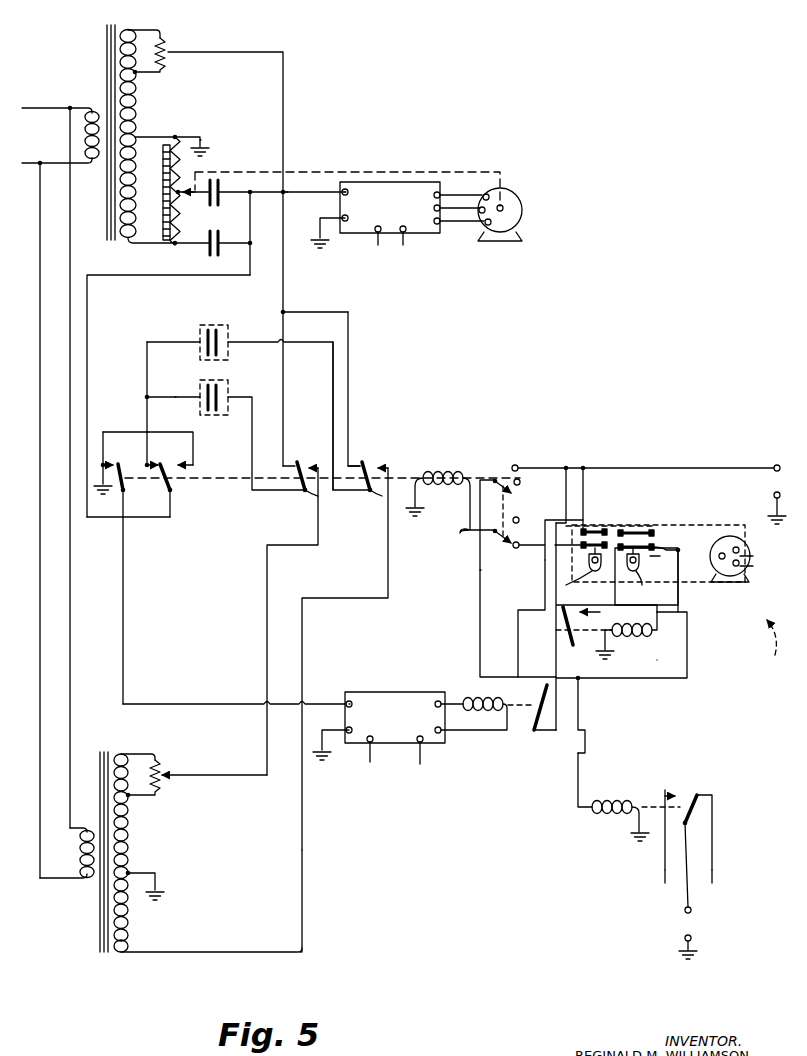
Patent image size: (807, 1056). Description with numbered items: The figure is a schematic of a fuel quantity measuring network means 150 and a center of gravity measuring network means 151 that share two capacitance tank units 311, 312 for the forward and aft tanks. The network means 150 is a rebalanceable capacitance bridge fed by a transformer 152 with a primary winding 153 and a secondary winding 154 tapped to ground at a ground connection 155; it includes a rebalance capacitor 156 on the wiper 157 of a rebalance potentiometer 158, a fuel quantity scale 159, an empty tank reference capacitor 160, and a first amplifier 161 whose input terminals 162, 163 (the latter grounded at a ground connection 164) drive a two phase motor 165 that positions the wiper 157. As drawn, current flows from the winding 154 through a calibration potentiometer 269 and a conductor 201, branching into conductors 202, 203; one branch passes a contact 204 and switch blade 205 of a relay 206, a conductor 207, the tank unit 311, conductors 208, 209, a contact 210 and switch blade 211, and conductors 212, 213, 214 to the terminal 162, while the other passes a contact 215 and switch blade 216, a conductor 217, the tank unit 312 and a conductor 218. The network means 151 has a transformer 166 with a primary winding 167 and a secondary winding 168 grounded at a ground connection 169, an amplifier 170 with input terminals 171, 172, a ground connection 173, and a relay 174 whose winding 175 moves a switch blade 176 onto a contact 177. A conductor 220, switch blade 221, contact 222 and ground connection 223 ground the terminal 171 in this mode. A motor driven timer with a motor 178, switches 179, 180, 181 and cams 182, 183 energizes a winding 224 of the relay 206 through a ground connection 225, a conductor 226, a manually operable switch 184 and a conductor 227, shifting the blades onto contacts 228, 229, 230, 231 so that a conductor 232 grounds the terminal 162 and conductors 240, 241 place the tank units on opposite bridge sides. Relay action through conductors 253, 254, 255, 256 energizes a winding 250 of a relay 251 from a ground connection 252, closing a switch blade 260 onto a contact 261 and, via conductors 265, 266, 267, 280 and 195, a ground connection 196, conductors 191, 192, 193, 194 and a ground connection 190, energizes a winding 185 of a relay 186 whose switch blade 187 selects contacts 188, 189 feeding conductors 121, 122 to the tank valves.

The conductor 121 is at (664, 874).
The conductor 122 is at (724, 876).
The fuel quantity measuring network means 150 is at (327, 76).
The center of gravity measuring network means 151 is at (350, 927).
The transformer 152 is at (120, 129).
The primary winding 153 is at (92, 113).
The secondary winding 154 is at (141, 108).
The ground connection 155 is at (200, 148).
The rebalance capacitor 156 is at (218, 192).
The wiper 157 is at (179, 196).
The rebalance potentiometer 158 is at (192, 189).
The fuel quantity scale 159 is at (151, 194).
The empty tank reference capacitor 160 is at (213, 237).
The first amplifier 161 is at (400, 182).
The input terminal 162 is at (348, 192).
The input terminal 163 is at (345, 218).
The ground connection 164 is at (329, 240).
The two phase motor 165 is at (521, 192).
The transformer 166 is at (171, 838).
The primary winding 167 is at (80, 844).
The secondary winding 168 is at (143, 836).
The ground connection 169 is at (160, 888).
The amplifier 170 is at (400, 692).
The input terminal 171 is at (351, 704).
The input terminal 172 is at (355, 730).
The ground connection 173 is at (330, 754).
The relay 174 is at (473, 692).
The winding 175 is at (481, 708).
The switch blade 176 is at (532, 733).
The contact 177 is at (529, 696).
The motor 178 is at (742, 542).
The switch 179 is at (606, 528).
The switch 180 is at (656, 541).
The switch 181 is at (656, 558).
The cam 182 is at (583, 575).
The cam 183 is at (632, 575).
The manually operable switch 184 is at (516, 552).
The winding 185 is at (612, 814).
The relay 186 is at (622, 794).
The switch blade 187 is at (694, 791).
The contact 188 is at (663, 826).
The contact 189 is at (722, 830).
The ground connection 190 is at (777, 512).
The conductor 191 is at (726, 466).
The conductor 192 is at (577, 467).
The conductor 193 is at (539, 466).
The conductor 194 is at (479, 572).
The conductor 195 is at (583, 723).
The ground connection 196 is at (637, 834).
The conductor 201 is at (283, 140).
The conductor 202 is at (285, 376).
The conductor 203 is at (350, 356).
The contact 204 is at (364, 457).
The switch blade 205 is at (378, 498).
The relay 206 is at (453, 472).
The conductor 207 is at (332, 406).
The conductor 208 is at (146, 364).
The conductor 209 is at (146, 431).
The contact 210 is at (156, 460).
The switch blade 211 is at (172, 492).
The conductor 212 is at (121, 275).
The conductor 213 is at (258, 210).
The conductor 214 is at (323, 192).
The contact 215 is at (294, 462).
The switch blade 216 is at (308, 498).
The conductor 217 is at (253, 462).
The conductor 218 is at (176, 398).
The conductor 220 is at (198, 704).
The switch blade 221 is at (128, 492).
The contact 222 is at (107, 460).
The ground connection 223 is at (128, 584).
The winding 224 is at (448, 485).
The ground connection 225 is at (424, 508).
The conductor 226 is at (495, 536).
The conductor 227 is at (590, 485).
The contact 228 is at (389, 470).
The contact 229 is at (319, 467).
The contact 230 is at (192, 469).
The contact 231 is at (132, 464).
The conductor 232 is at (194, 452).
The conductor 240 is at (304, 851).
The conductor 241 is at (266, 739).
The winding 250 is at (657, 650).
The relay 251 is at (670, 658).
The ground connection 252 is at (595, 673).
The conductor 253 is at (646, 576).
The conductor 254 is at (605, 527).
The conductor 255 is at (564, 728).
The conductor 256 is at (548, 618).
The switch blade 260 is at (573, 645).
The contact 261 is at (600, 607).
The conductor 265 is at (687, 676).
The conductor 266 is at (664, 622).
The conductor 267 is at (560, 638).
The calibration potentiometer 269 is at (174, 40).
The conductor 280 is at (698, 596).
The tank unit 311 is at (200, 330).
The tank unit 312 is at (200, 388).